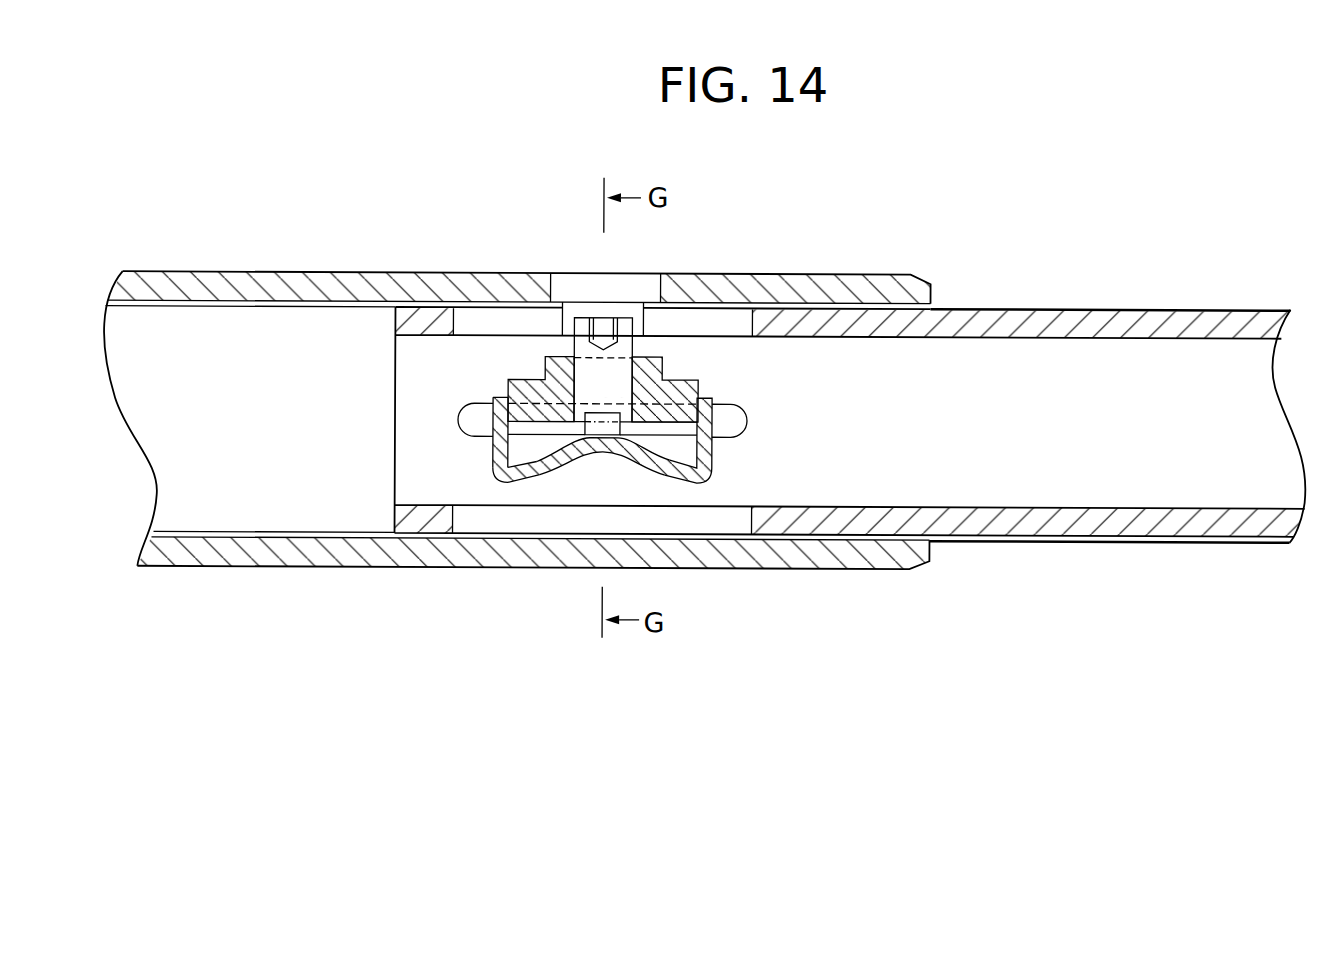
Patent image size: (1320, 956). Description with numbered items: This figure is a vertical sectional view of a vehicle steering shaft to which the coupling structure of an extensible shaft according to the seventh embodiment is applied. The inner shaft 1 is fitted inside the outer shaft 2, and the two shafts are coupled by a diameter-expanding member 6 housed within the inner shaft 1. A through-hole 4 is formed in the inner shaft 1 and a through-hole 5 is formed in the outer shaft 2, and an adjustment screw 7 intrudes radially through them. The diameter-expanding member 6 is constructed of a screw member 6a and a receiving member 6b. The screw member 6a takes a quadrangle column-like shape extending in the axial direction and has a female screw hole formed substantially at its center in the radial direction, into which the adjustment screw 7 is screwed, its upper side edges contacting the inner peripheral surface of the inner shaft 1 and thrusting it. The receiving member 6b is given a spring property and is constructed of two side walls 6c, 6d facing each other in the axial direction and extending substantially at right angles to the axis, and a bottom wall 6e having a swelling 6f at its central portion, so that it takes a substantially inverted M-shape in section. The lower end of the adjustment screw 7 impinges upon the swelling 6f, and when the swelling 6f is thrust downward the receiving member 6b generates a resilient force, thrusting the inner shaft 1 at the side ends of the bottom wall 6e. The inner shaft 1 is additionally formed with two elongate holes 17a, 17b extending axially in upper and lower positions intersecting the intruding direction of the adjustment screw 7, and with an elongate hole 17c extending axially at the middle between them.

The inner shaft 1 is at (1172, 326).
The outer shaft 2 is at (197, 287).
The through-hole 4 is at (642, 322).
The through-hole 5 is at (568, 286).
The diameter-expanding member 6 is at (741, 383).
The screw member 6a is at (647, 372).
The receiving member 6b is at (704, 458).
The side wall 6c is at (745, 418).
The side wall 6d is at (512, 416).
The bottom wall 6e is at (657, 460).
The swelling 6f is at (598, 452).
The adjustment screw 7 is at (597, 378).
The elongate hole 17a is at (477, 319).
The elongate hole 17b is at (482, 520).
The elongate hole 17c is at (482, 426).